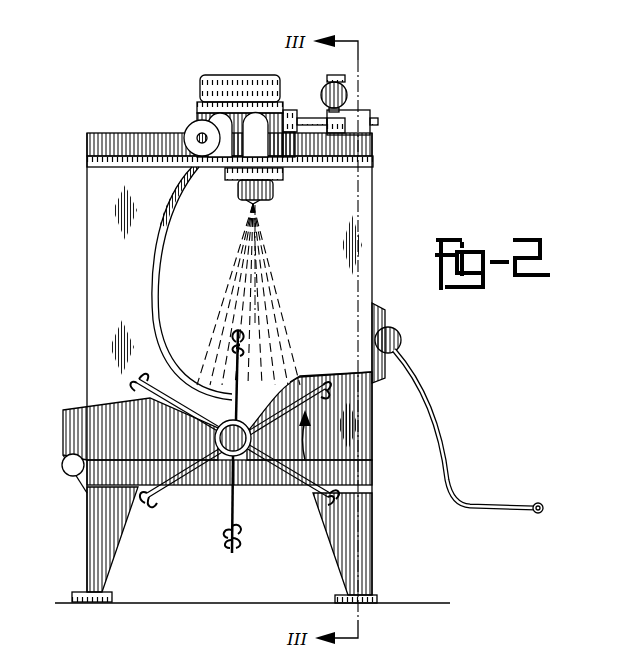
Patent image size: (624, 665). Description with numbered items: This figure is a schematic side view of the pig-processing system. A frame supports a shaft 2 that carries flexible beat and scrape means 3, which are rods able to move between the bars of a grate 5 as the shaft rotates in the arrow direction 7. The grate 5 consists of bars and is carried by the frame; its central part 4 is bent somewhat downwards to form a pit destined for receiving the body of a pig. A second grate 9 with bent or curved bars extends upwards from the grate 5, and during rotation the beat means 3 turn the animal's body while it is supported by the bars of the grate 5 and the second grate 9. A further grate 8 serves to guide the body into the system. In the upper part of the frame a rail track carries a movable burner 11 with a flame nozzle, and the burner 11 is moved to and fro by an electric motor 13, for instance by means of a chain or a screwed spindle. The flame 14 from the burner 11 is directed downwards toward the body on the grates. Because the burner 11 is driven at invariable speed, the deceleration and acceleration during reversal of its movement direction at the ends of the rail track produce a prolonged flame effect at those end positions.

The shaft 2 is at (243, 475).
The flexible beat and scrape means 3 is at (287, 488).
The bent central part of the grate 4 is at (277, 378).
The grate 5 is at (345, 372).
The arrow direction 7 is at (305, 447).
The further grate 8 is at (446, 452).
The second grate 9 is at (152, 300).
The movable burner 11 is at (283, 178).
The electric motor 13 is at (337, 145).
The flame 14 is at (242, 283).